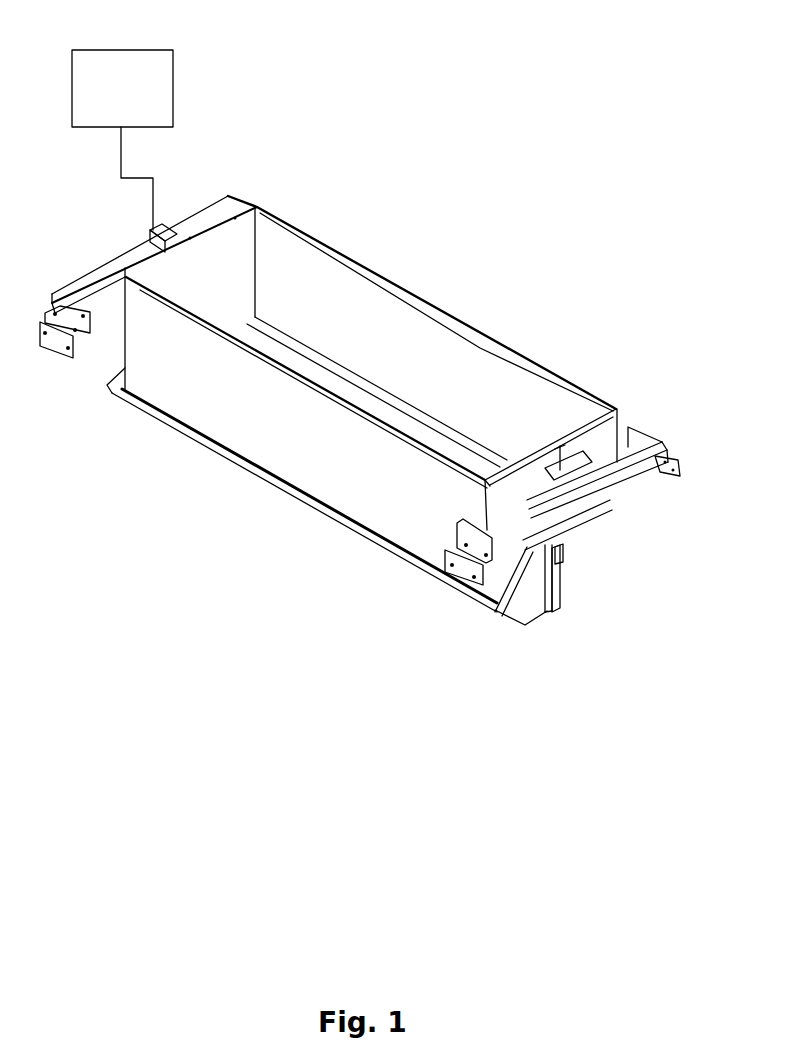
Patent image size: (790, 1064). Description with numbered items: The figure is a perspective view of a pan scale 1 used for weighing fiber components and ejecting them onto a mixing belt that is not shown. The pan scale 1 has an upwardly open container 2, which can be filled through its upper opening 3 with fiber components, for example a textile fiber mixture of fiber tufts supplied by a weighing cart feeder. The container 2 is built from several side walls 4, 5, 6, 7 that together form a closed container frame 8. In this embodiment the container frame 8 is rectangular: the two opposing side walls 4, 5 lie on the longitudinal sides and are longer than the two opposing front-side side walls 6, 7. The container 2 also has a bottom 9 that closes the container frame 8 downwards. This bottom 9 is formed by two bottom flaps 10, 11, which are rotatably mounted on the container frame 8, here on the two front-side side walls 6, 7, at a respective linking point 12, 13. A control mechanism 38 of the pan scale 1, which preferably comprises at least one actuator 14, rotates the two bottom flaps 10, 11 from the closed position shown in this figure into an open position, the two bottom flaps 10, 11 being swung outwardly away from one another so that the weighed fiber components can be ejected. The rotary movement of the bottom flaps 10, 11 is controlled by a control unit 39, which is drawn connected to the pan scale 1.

The pan scale 1 is at (571, 124).
The container 2 is at (520, 343).
The upper opening 3 is at (352, 355).
The side wall 4 is at (320, 465).
The side wall 5 is at (405, 337).
The side wall 6 is at (520, 500).
The side wall 7 is at (205, 282).
The container frame 8 is at (150, 338).
The bottom 9 is at (557, 606).
The bottom flap 10 is at (522, 594).
The bottom flap 11 is at (577, 558).
The linking point 12 is at (512, 558).
The linking point 13 is at (615, 500).
The actuator 14 is at (573, 465).
The control mechanism 38 is at (540, 612).
The control unit 39 is at (137, 106).